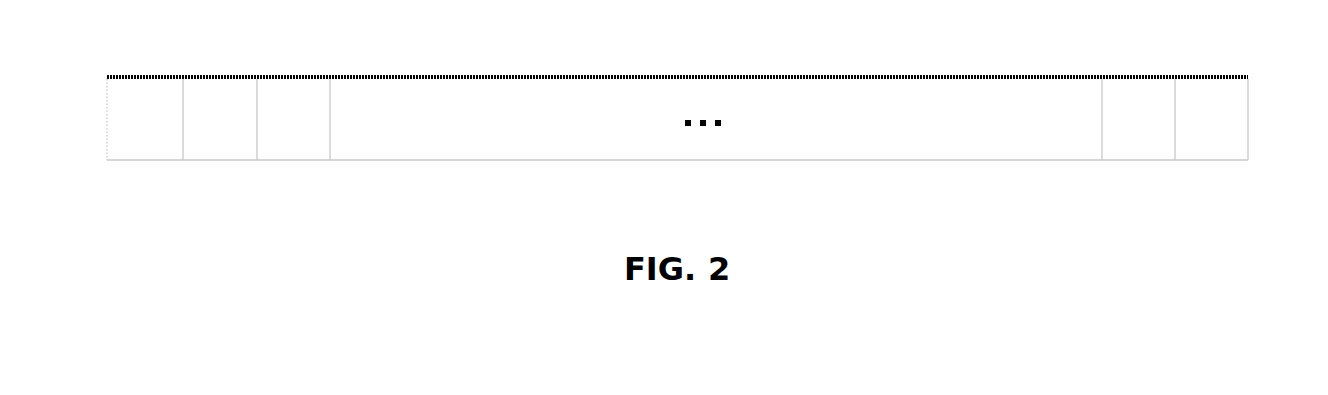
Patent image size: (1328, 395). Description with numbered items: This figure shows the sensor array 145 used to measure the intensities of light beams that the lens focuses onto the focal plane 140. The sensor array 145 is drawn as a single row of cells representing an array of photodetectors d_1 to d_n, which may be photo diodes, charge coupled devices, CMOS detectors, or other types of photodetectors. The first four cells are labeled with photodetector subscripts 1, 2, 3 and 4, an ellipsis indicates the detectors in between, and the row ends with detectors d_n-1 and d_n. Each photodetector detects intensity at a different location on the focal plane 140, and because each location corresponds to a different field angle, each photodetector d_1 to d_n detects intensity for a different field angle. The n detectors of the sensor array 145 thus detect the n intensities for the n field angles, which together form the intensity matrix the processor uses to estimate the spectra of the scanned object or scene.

The focal plane 140 is at (1206, 75).
The sensor array 145 is at (717, 119).
The data element d1 1 is at (159, 119).
The data element d2 2 is at (230, 119).
The data element d3 3 is at (304, 119).
The data element d4 4 is at (728, 119).